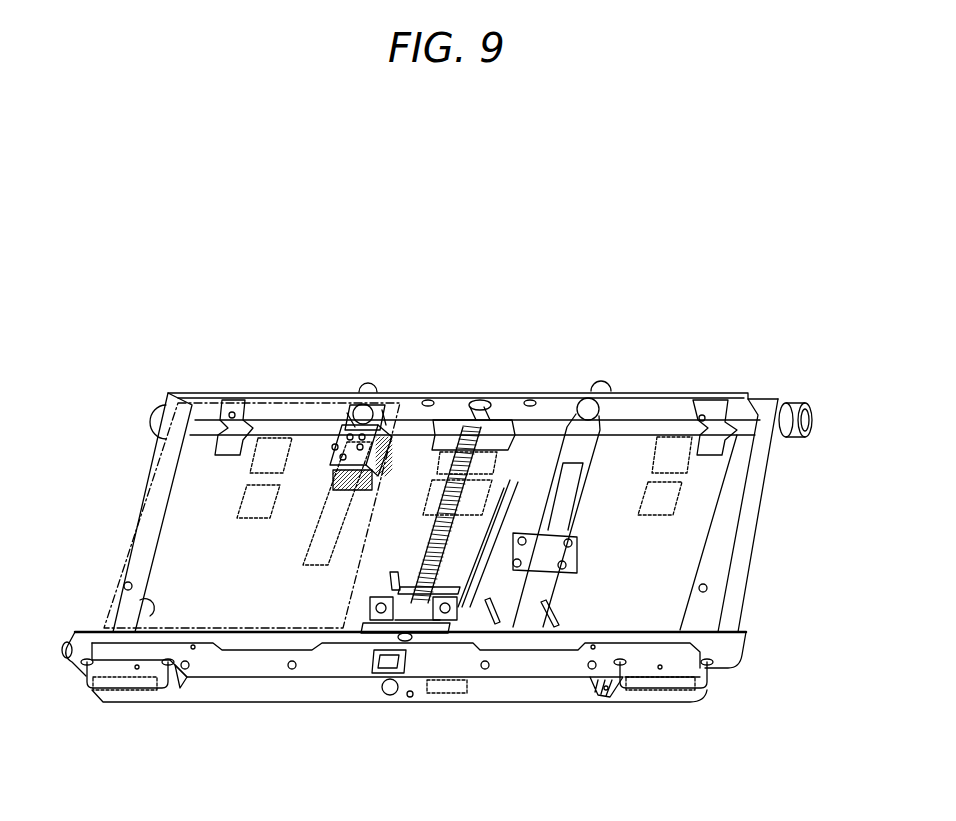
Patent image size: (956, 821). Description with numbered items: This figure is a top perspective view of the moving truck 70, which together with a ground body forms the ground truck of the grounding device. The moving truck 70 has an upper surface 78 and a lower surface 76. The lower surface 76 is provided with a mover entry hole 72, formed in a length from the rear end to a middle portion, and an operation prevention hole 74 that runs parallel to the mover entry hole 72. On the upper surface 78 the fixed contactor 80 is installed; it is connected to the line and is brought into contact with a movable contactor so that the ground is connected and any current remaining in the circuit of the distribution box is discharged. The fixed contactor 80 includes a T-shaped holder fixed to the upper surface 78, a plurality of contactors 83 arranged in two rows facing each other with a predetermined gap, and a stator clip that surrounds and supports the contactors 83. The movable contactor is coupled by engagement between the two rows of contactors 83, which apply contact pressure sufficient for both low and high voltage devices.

The moving truck 70 is at (257, 705).
The mover entry hole 72 is at (376, 435).
The operation prevention hole 74 is at (347, 420).
The lower surface 76 is at (627, 455).
The upper surface 78 is at (130, 528).
The fixed contactor 80 is at (329, 426).
The contactors 83 is at (383, 468).